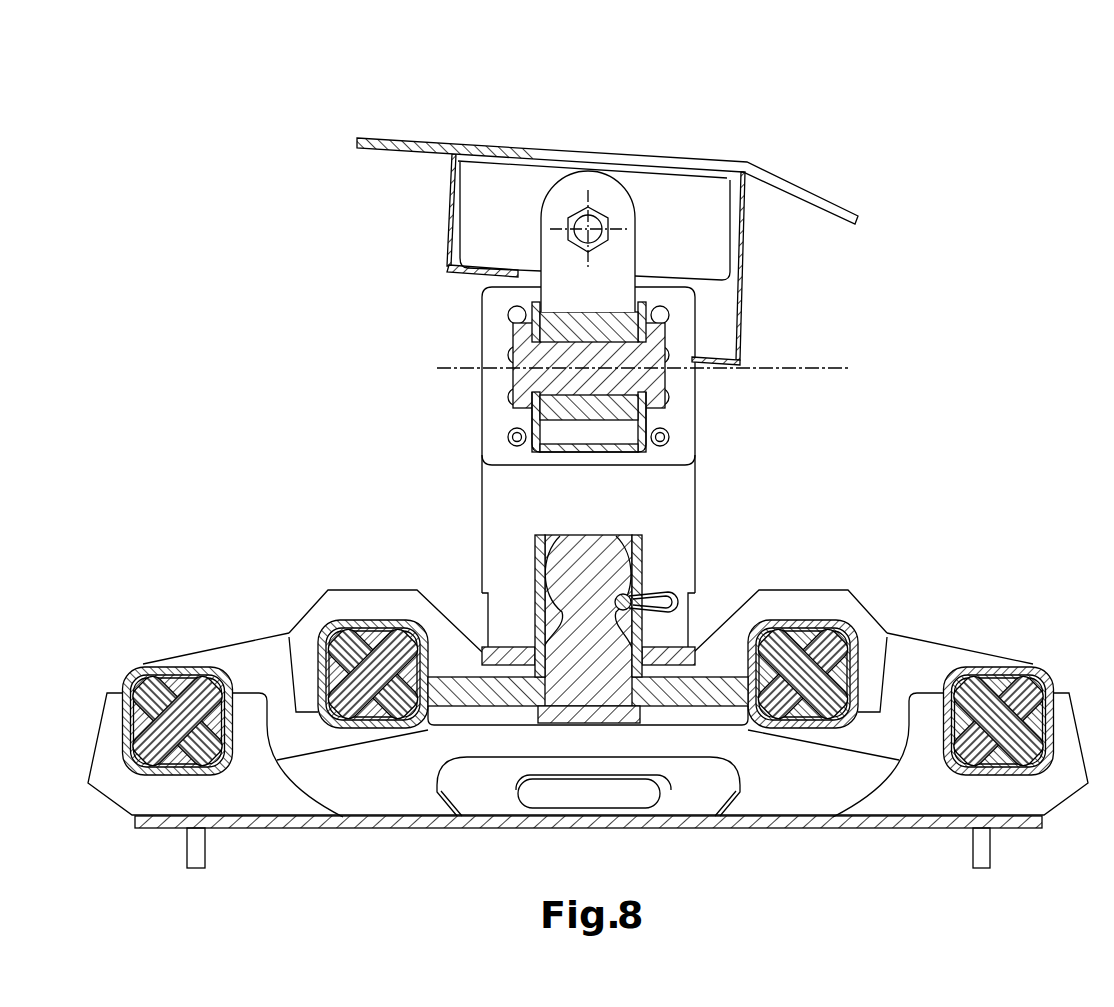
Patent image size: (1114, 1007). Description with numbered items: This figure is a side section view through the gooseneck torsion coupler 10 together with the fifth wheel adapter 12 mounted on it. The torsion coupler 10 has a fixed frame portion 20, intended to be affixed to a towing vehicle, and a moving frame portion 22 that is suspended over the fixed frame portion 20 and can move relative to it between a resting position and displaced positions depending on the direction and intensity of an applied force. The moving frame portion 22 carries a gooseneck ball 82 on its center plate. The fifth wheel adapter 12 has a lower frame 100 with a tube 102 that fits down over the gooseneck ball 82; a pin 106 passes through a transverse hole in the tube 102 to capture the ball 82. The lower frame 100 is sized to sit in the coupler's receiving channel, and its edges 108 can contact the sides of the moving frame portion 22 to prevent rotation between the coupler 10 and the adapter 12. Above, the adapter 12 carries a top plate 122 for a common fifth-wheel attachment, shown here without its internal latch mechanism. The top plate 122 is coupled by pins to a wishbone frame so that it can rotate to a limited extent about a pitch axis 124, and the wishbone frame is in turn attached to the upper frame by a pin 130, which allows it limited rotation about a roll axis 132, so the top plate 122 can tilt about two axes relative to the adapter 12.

The torsion coupler 10 is at (116, 611).
The fifth wheel adapter 12 is at (293, 199).
The fixed frame portion 20 is at (322, 856).
The moving frame portion 22 is at (344, 574).
The gooseneck ball 82 is at (583, 547).
The lower frame 100 is at (697, 497).
The tube 102 is at (538, 585).
The pin 106 is at (630, 597).
The edges 108 is at (700, 640).
The top plate 122 is at (423, 138).
The pitch axis 124 is at (600, 217).
The pin 130 is at (513, 337).
The roll axis 132 is at (818, 366).